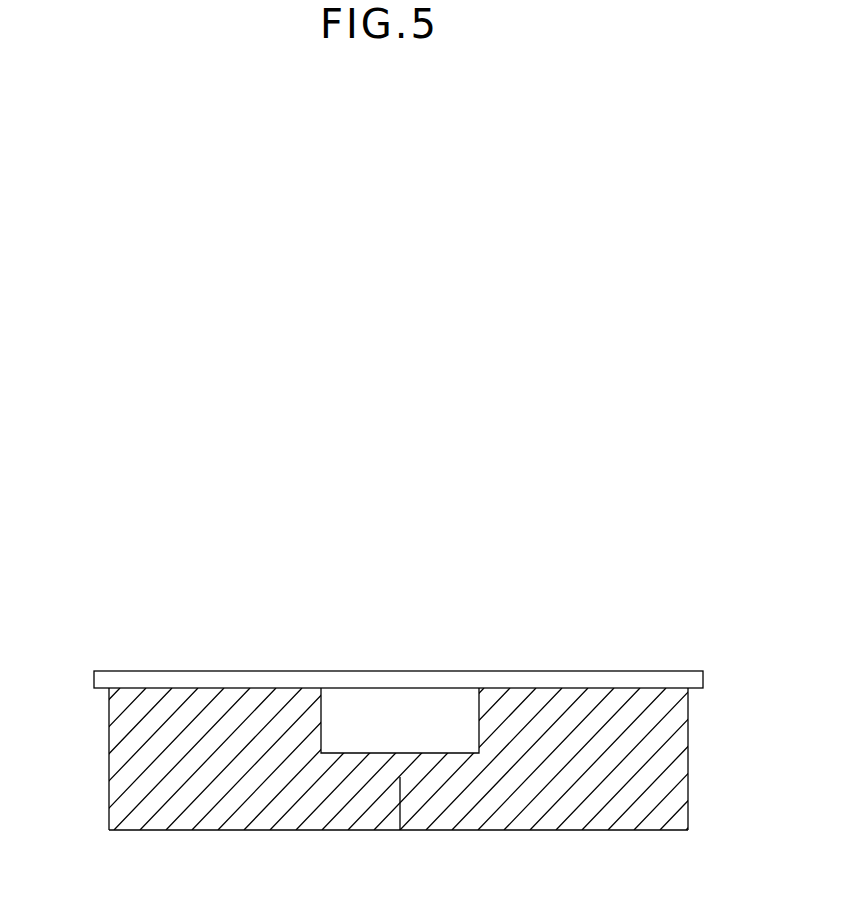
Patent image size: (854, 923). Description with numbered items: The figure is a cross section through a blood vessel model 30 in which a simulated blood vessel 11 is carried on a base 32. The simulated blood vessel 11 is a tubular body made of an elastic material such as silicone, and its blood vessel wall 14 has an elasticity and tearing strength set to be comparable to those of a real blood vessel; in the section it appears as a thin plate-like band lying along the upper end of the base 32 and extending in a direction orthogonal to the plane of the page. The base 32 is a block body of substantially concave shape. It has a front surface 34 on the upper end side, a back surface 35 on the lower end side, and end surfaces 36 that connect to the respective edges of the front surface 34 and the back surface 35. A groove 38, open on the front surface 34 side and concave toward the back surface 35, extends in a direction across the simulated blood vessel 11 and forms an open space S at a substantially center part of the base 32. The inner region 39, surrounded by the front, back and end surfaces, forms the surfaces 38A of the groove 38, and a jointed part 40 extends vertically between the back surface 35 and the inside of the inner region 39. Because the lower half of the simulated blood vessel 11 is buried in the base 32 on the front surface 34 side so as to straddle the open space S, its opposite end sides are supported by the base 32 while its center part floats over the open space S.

The blood vessel model 30 is at (408, 596).
The simulated blood vessel 11 is at (230, 666).
The blood vessel wall 14 is at (510, 679).
The front surface 34 is at (655, 688).
The base 32 is at (630, 818).
The end surfaces 36 is at (109, 760).
The back surface 35 is at (210, 832).
The inner region 39 is at (548, 813).
The jointed part 40 is at (399, 802).
The groove 38 is at (468, 697).
The surfaces of the groove 38A is at (332, 700).
The open space S is at (420, 703).